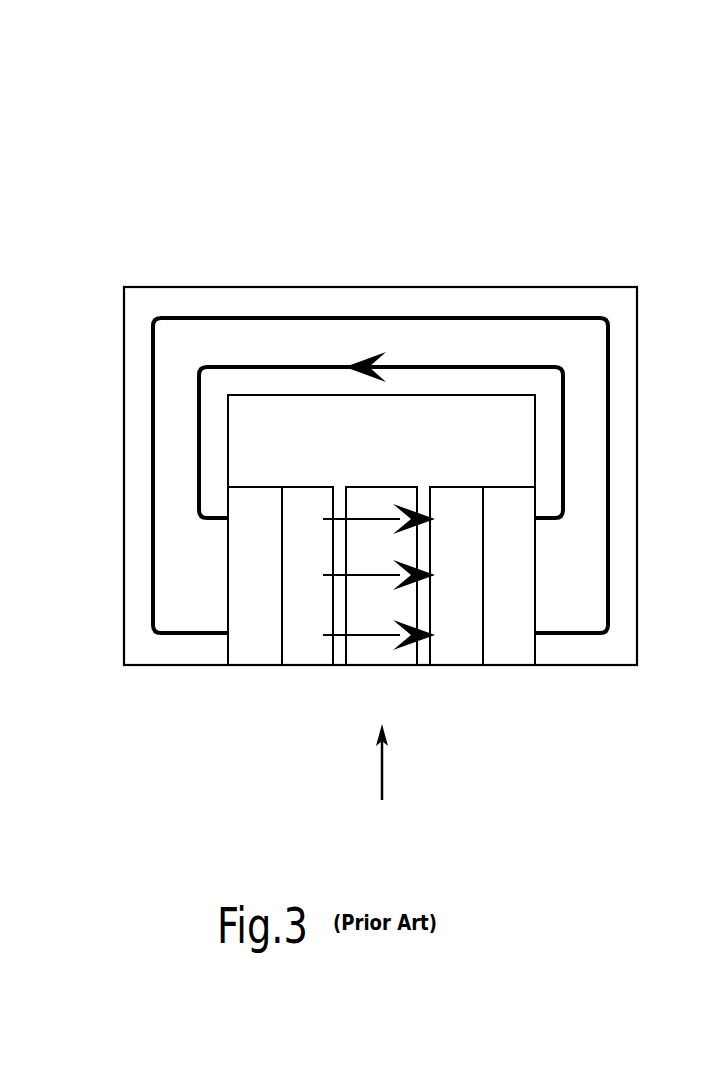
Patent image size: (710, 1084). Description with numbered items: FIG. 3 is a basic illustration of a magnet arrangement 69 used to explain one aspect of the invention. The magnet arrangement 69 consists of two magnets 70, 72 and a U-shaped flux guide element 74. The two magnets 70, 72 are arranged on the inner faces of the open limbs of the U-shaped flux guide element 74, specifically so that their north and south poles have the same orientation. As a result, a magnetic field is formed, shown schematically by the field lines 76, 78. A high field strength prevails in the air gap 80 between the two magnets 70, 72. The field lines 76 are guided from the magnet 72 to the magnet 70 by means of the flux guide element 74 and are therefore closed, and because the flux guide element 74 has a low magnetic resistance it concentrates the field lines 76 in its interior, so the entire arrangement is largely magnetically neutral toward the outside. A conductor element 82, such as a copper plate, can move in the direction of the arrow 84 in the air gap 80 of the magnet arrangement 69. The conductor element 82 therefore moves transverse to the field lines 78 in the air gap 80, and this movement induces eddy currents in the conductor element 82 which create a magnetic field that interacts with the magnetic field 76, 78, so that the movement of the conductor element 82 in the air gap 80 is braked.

The magnet arrangement 69 is at (147, 190).
The magnet 70 is at (261, 676).
The magnet 72 is at (486, 680).
The U-shaped flux guide element 74 is at (460, 290).
The field lines 76 is at (222, 318).
The field lines 78 is at (365, 518).
The air gap 80 is at (430, 657).
The conductor element 82 is at (398, 487).
The arrow 84 is at (383, 773).